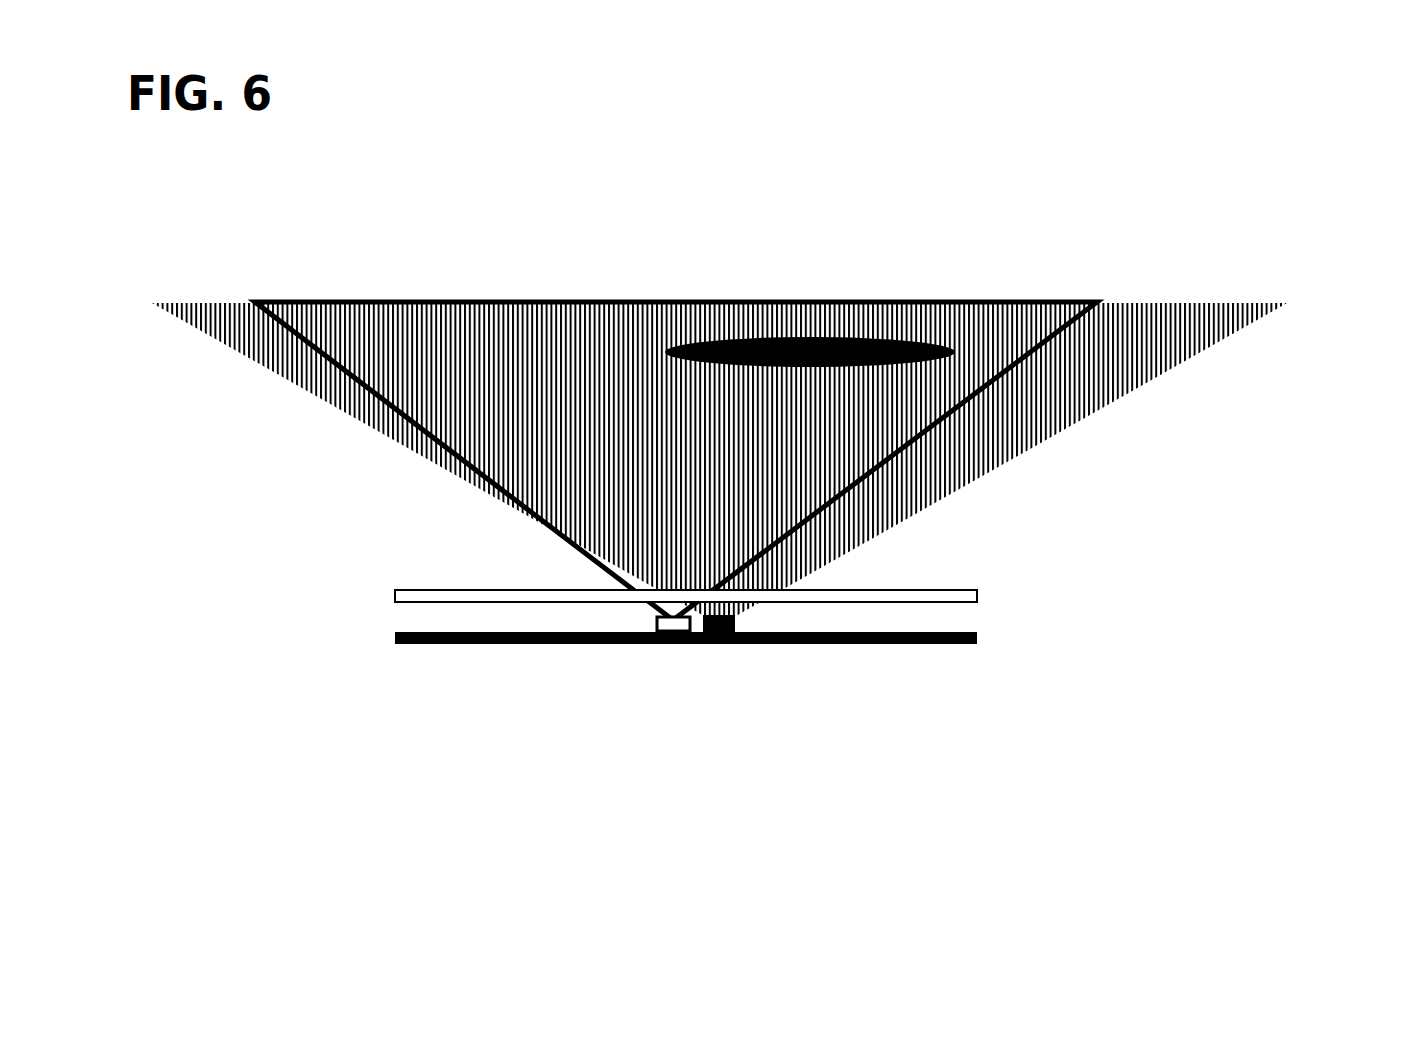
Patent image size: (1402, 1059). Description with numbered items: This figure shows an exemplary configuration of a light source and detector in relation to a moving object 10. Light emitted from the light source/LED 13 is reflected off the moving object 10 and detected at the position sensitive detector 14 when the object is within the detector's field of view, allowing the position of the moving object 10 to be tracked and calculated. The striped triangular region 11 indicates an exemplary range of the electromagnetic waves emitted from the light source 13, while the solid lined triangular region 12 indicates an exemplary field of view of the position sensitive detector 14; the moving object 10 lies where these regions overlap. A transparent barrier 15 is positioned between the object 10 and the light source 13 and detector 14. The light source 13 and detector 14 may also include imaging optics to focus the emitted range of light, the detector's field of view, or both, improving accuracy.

The moving object 10 is at (817, 318).
The striped triangular region 11 is at (1245, 535).
The solid lined triangular region 12 is at (901, 472).
The light source/LED 13 is at (1152, 730).
The position sensitive detector 14 is at (412, 742).
The transparent barrier 15 is at (388, 585).